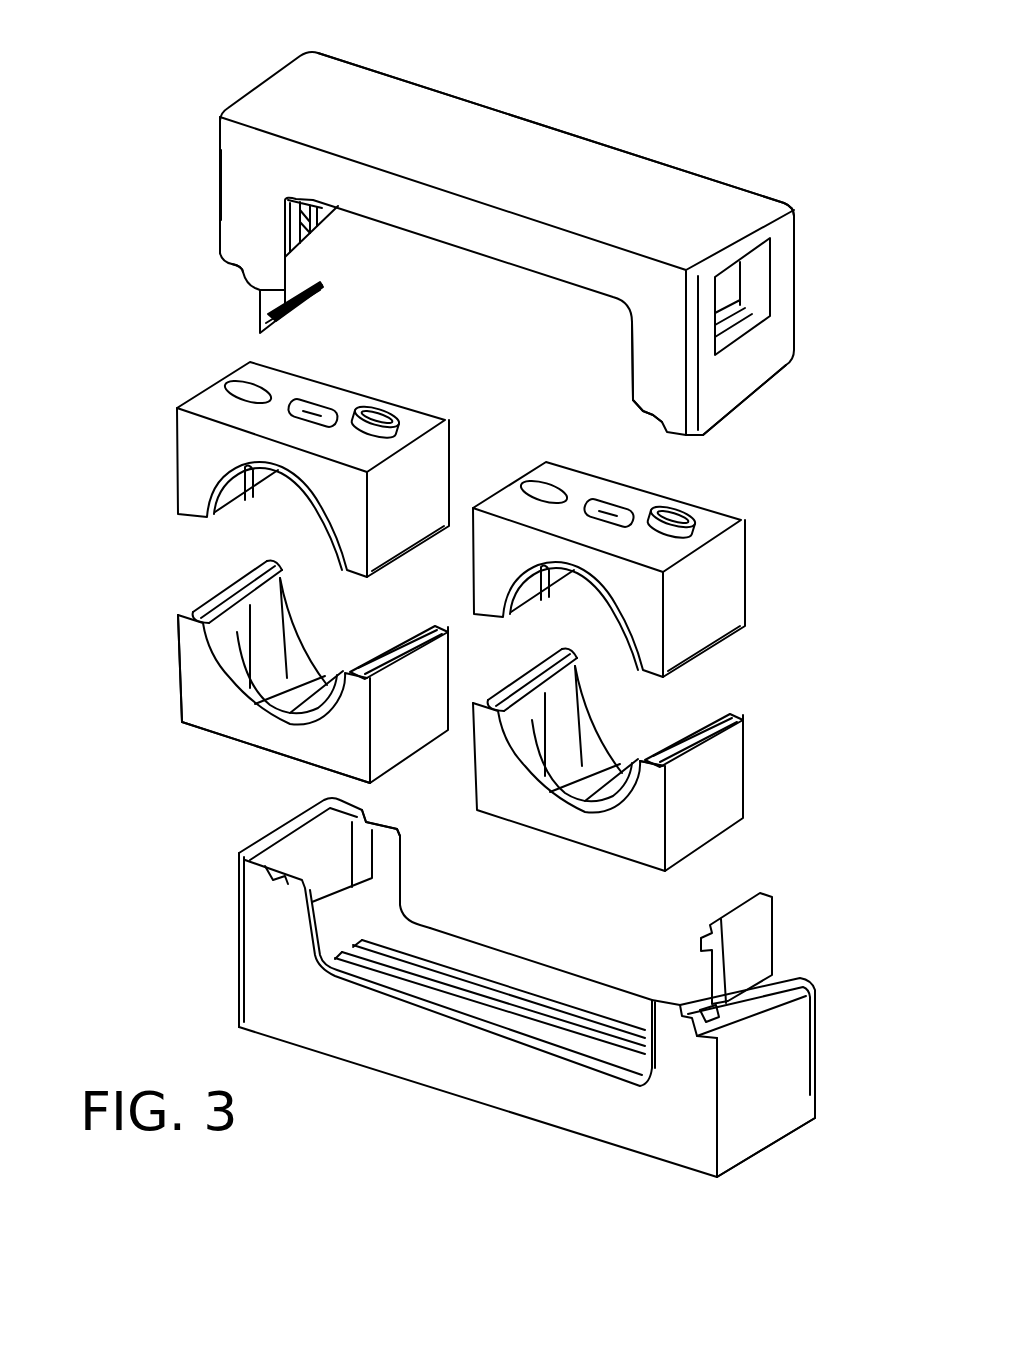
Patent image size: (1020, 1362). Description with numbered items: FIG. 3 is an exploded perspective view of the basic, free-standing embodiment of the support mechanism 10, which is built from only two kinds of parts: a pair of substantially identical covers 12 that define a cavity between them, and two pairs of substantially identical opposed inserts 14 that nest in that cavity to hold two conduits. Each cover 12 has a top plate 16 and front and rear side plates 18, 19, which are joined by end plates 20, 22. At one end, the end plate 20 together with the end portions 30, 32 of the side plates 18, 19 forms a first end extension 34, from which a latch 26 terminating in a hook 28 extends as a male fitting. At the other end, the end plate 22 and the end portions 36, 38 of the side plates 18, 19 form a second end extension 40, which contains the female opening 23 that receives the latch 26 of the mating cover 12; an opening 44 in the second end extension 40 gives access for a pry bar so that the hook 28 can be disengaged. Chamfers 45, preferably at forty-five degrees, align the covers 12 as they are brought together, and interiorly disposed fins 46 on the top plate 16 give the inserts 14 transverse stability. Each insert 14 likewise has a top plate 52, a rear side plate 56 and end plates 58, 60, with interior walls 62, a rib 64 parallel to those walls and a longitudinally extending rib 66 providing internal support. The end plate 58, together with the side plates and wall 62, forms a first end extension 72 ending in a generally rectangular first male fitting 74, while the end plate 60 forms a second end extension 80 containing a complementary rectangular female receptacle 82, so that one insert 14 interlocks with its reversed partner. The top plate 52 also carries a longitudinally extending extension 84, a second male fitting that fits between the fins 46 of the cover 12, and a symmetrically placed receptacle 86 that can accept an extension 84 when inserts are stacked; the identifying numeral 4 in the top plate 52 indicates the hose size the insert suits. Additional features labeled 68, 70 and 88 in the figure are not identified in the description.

The identifying numeral 4 is at (262, 40).
The support mechanism 10 is at (770, 136).
The cover 12 is at (620, 127).
The insert 14 is at (172, 430).
The top plate 16 is at (355, 100).
The front side plate 18 is at (550, 253).
The rear side plate 19 is at (478, 88).
The end plate 20 is at (215, 142).
The end plate 22 is at (748, 350).
The female opening 23 is at (305, 843).
The latch 26 is at (293, 273).
The hook 28 is at (300, 303).
The end portion of side plate 18 30 is at (243, 217).
The end portion of side plate 19 32 is at (800, 995).
The first end extension 34 is at (215, 182).
The end portion of side plate 18 36 is at (655, 362).
The end portion of side plate 19 38 is at (795, 215).
The second end extension 40 is at (725, 398).
The opening 44 is at (752, 290).
The chamfer 45 is at (242, 280).
The fin 46 is at (580, 1007).
The top plate 52 is at (598, 378).
The rear side plate 56 is at (200, 468).
The end plate 58 is at (740, 560).
The end plate 60 is at (200, 390).
The interior wall 62 is at (292, 600).
The rib 64 is at (348, 652).
The longitudinally extending rib 66 is at (297, 630).
The bottom lip 68 is at (692, 650).
The lower face 70 is at (205, 700).
The first end extension 72 is at (195, 632).
The first male fitting 74 is at (207, 606).
The second end extension 80 is at (725, 795).
The female receptacle 82 is at (415, 624).
The longitudinally extending extension 84 is at (380, 408).
The receptacle 86 is at (248, 390).
The opening 88 is at (313, 410).